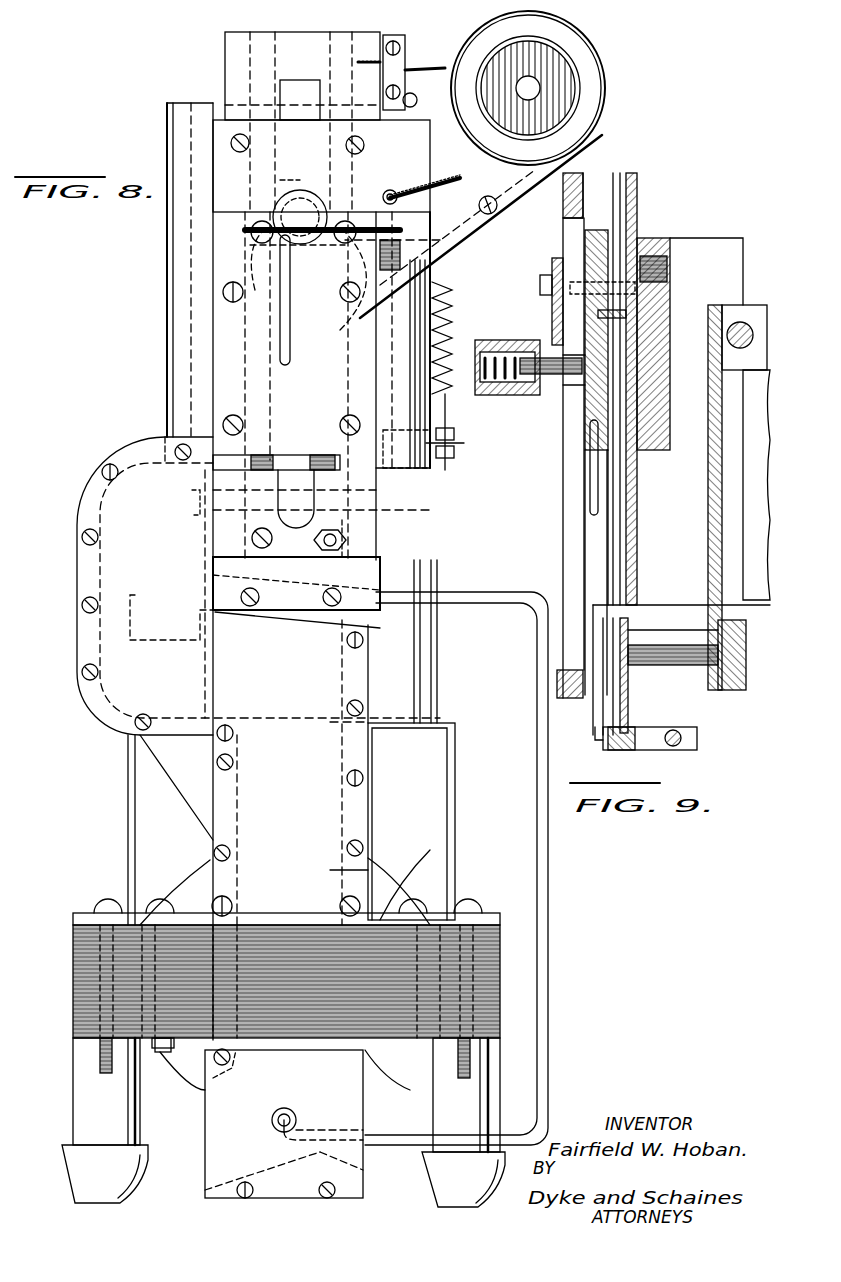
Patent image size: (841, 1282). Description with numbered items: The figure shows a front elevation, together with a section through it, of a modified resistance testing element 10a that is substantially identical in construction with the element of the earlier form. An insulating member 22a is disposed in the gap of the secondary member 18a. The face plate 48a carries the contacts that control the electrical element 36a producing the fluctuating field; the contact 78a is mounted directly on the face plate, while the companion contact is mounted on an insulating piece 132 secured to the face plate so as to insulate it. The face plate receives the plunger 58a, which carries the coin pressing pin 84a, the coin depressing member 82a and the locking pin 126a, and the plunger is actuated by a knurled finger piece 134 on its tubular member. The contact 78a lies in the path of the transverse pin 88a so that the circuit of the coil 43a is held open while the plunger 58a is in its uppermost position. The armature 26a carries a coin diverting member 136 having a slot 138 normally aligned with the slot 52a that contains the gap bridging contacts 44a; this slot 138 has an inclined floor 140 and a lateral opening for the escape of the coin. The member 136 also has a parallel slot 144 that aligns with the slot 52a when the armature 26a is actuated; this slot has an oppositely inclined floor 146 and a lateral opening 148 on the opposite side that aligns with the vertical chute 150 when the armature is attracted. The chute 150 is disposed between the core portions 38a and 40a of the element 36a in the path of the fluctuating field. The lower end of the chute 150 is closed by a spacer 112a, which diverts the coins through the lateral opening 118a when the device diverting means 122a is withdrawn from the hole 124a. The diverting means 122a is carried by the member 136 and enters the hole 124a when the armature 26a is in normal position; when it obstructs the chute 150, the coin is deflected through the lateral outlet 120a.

In FIG. 8, the resistance testing element 10a is at (162, 345).
In FIG. 8, the secondary member 18a is at (167, 300).
In FIG. 9, the secondary member 18a is at (710, 248).
In FIG. 9, the insulating member 22a is at (636, 520).
In FIG. 9, the armature 26a is at (720, 532).
In FIG. 8, the electrical element 36a is at (178, 878).
In FIG. 8, the core portion 38a is at (245, 925).
In FIG. 8, the core portion 40a is at (412, 920).
In FIG. 8, the coil 43a is at (380, 890).
In FIG. 9, the gap bridging contacts 44a is at (628, 534).
In FIG. 8, the face plate 48a is at (360, 490).
In FIG. 9, the face plate 48a is at (563, 445).
In FIG. 9, the slot 52a is at (630, 480).
In FIG. 9, the plunger 58a is at (586, 250).
In FIG. 8, the contact 78a is at (430, 270).
In FIG. 9, the coin depressing member 82a is at (598, 314).
In FIG. 9, the coin pressing pin 84a is at (570, 392).
In FIG. 8, the transverse pin 88a is at (426, 190).
In FIG. 8, the spacer 112a is at (300, 1083).
In FIG. 8, the lateral opening 118a is at (205, 1150).
In FIG. 8, the lateral outlet 120a is at (362, 1098).
In FIG. 8, the device diverting means 122a is at (548, 905).
In FIG. 8, the hole 124a is at (317, 1124).
In FIG. 8, the locking pin 126a is at (286, 365).
In FIG. 9, the locking pin 126a is at (594, 475).
In FIG. 8, the insulating piece 132 is at (235, 155).
In FIG. 9, the insulating piece 132 is at (585, 322).
In FIG. 8, the knurled finger piece 134 is at (248, 252).
In FIG. 9, the knurled finger piece 134 is at (526, 378).
In FIG. 8, the coin diverting member 136 is at (345, 580).
In FIG. 9, the coin diverting member 136 is at (625, 705).
In FIG. 9, the slot 138 is at (618, 682).
In FIG. 8, the inclined floor 140 is at (312, 540).
In FIG. 9, the parallel slot 144 is at (608, 635).
In FIG. 8, the oppositely inclined floor 146 is at (296, 631).
In FIG. 8, the lateral opening 148 is at (270, 580).
In FIG. 8, the vertical chute 150 is at (120, 672).